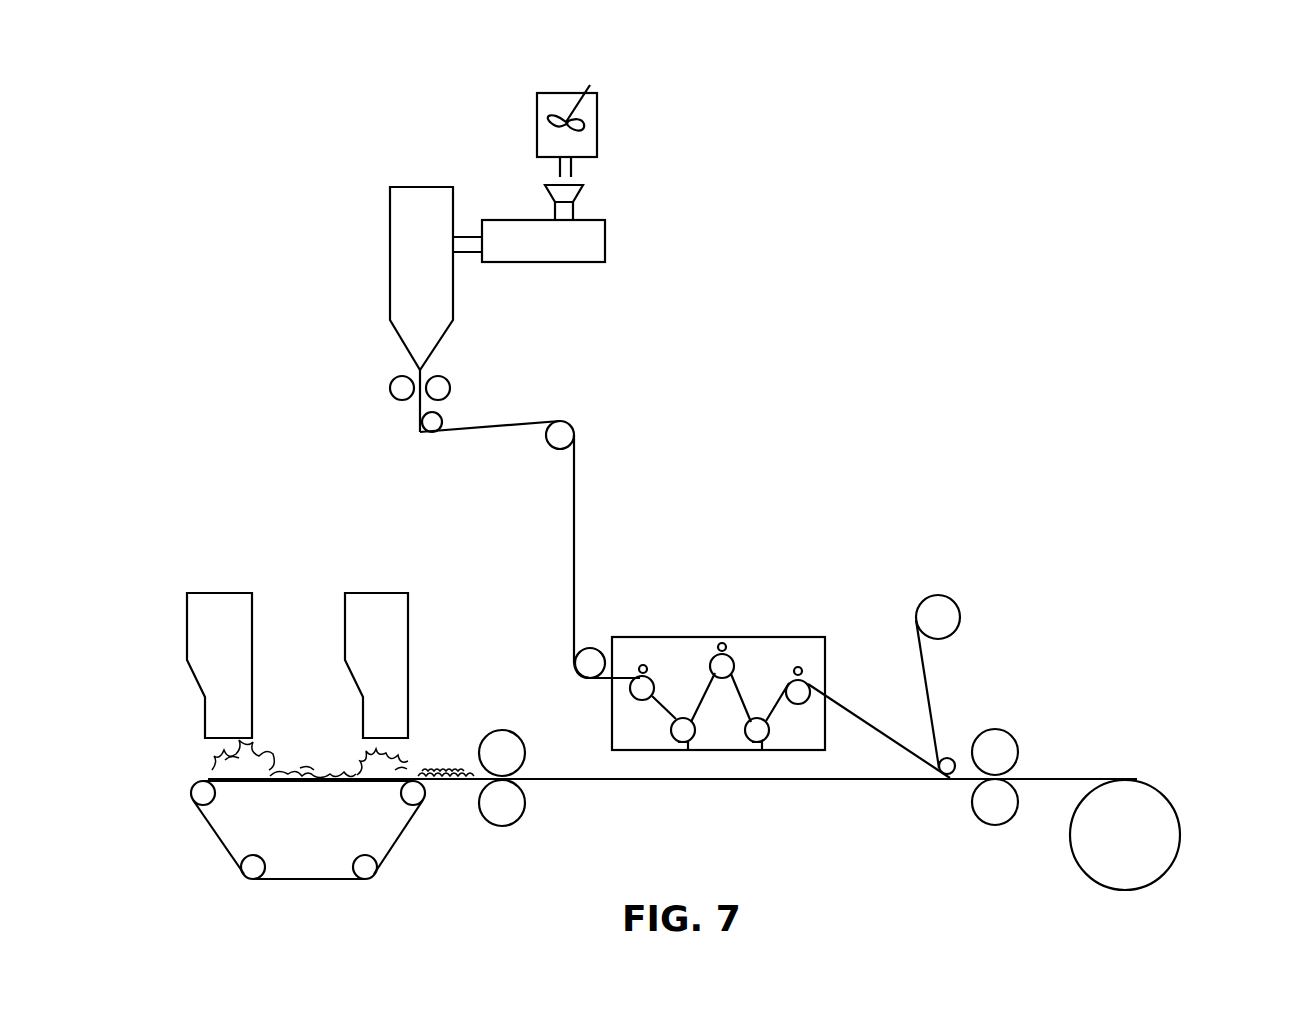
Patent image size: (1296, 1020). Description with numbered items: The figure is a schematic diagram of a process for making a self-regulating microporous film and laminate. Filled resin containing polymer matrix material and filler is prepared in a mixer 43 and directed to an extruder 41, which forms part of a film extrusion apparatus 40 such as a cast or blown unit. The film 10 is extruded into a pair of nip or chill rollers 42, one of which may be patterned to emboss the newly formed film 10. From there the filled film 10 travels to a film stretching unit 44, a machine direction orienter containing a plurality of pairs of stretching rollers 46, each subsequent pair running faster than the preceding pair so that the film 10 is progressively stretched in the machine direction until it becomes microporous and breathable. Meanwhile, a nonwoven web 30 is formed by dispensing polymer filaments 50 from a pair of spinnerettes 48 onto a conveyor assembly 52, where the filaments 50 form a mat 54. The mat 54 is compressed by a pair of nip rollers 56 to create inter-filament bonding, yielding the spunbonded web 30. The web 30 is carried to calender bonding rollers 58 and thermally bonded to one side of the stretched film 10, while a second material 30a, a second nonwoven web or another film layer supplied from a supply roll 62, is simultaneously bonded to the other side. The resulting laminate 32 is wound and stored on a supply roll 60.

The film 10 is at (492, 429).
The nonwoven web 30 is at (605, 781).
The second material 30a is at (930, 690).
The laminate 32 is at (1083, 779).
The film extrusion apparatus 40 is at (423, 210).
The extruder 41 is at (603, 245).
The nip or chill rollers 42 is at (388, 380).
The mixer 43 is at (600, 133).
The film stretching unit 44 is at (747, 637).
The stretching rollers 46 is at (643, 664).
The spinnerettes 48 is at (213, 592).
The polymer filaments 50 is at (355, 750).
The conveyor assembly 52 is at (340, 880).
The mat 54 is at (452, 768).
The nip rollers 56 is at (507, 730).
The calender bonding rollers 58 is at (1016, 745).
The supply roll 60 is at (1180, 845).
The supply roll 62 is at (945, 597).